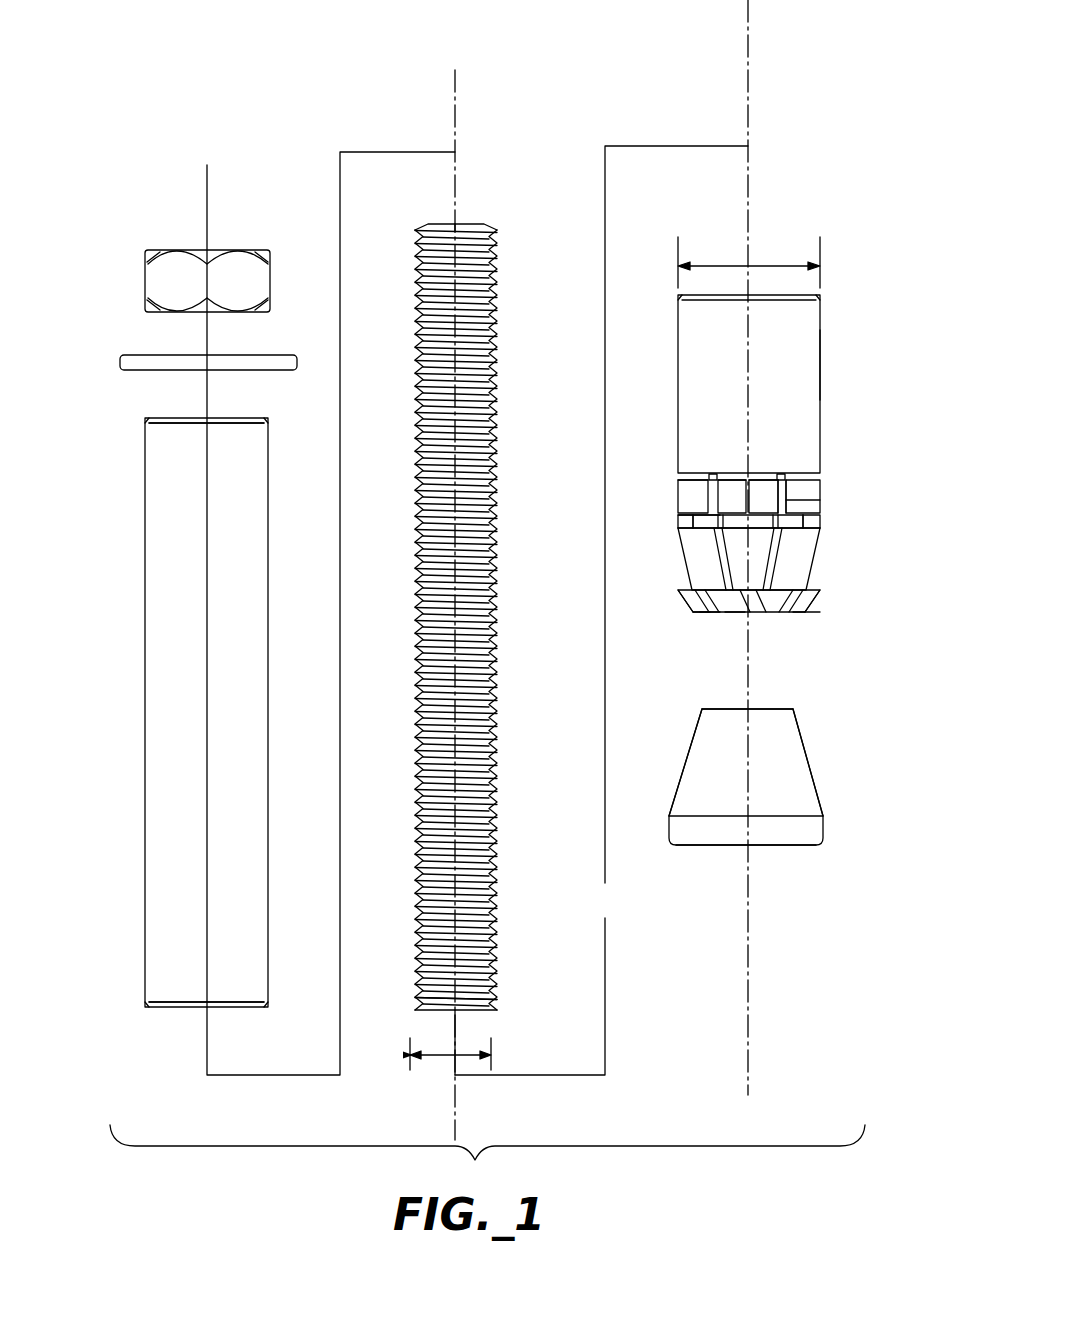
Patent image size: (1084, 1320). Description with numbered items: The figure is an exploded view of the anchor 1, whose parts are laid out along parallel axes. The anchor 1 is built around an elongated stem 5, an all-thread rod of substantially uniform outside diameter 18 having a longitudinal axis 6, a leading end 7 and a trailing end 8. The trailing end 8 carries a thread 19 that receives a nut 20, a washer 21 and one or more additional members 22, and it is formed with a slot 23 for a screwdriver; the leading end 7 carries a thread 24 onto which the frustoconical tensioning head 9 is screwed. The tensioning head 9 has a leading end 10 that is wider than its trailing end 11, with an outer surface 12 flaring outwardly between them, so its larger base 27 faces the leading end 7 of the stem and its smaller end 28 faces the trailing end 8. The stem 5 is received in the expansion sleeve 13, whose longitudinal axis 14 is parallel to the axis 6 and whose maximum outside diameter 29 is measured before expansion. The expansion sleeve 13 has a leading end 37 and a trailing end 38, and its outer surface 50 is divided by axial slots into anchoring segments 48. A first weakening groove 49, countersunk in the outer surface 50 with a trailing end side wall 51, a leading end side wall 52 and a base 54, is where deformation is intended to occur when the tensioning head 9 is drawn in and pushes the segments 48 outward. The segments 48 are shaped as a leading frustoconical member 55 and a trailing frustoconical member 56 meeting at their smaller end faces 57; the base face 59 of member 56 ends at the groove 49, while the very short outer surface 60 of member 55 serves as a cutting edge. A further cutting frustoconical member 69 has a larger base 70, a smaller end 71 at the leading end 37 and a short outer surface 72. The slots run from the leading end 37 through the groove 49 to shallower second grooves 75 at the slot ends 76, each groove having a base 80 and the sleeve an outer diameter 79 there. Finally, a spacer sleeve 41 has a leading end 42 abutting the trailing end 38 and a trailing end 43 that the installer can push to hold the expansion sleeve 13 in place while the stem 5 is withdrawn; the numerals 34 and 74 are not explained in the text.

The anchor 1 is at (812, 142).
The elongated stem 5 is at (464, 640).
The longitudinal axis 6 is at (458, 121).
The leading end 7 is at (476, 1012).
The trailing end 8 is at (482, 228).
The tensioning head 9 is at (772, 768).
The leading end of tensioning head 10 is at (808, 845).
The trailing end of tensioning head 11 is at (785, 709).
The outer surface of tensioning head 12 is at (715, 765).
The expansion sleeve 13 is at (796, 333).
The longitudinal axis of expansion sleeve 14 is at (752, 76).
The outside diameter 18 is at (430, 1058).
The thread 19 is at (500, 258).
The nut 20 is at (145, 277).
The washer 21 is at (120, 362).
The additional members 22 is at (808, 487).
The slot 23 is at (458, 228).
The thread 24 is at (498, 992).
The larger base 27 is at (826, 818).
The smaller end 28 is at (796, 710).
The maximum outside diameter 29 is at (700, 263).
The segment top 34 is at (732, 467).
The leading end of expansion sleeve 37 is at (764, 614).
The trailing end of expansion sleeve 38 is at (822, 293).
The spacer sleeve 41 is at (190, 709).
The leading end of spacer sleeve 42 is at (253, 1007).
The trailing end of spacer sleeve 43 is at (255, 418).
The anchoring segments 48 is at (758, 456).
The first weakening groove 49 is at (710, 529).
The outer surface of expansion sleeve 50 is at (812, 358).
The trailing end side wall 51 is at (816, 512).
The leading end side wall 52 is at (692, 537).
The base of first groove 54 is at (690, 518).
The leading frustoconical member 55 is at (680, 593).
The trailing frustoconical member 56 is at (676, 574).
The end faces of smaller diameter 57 is at (806, 590).
The base face of trailing frustoconical member 59 is at (690, 527).
The outer surface of leading frustoconical member 60 is at (706, 613).
The cutting frustoconical member 69 is at (812, 611).
The larger base of cutting frustoconical member 70 is at (818, 594).
The smaller end of cutting frustoconical member 71 is at (691, 611).
The outer surface of cutting frustoconical member 72 is at (731, 612).
The segment side edge 74 is at (809, 486).
The second grooves 75 is at (713, 476).
The ends of slots 76 is at (787, 482).
The outer diameter at second groove base 79 is at (692, 466).
The base of second groove 80 is at (764, 478).